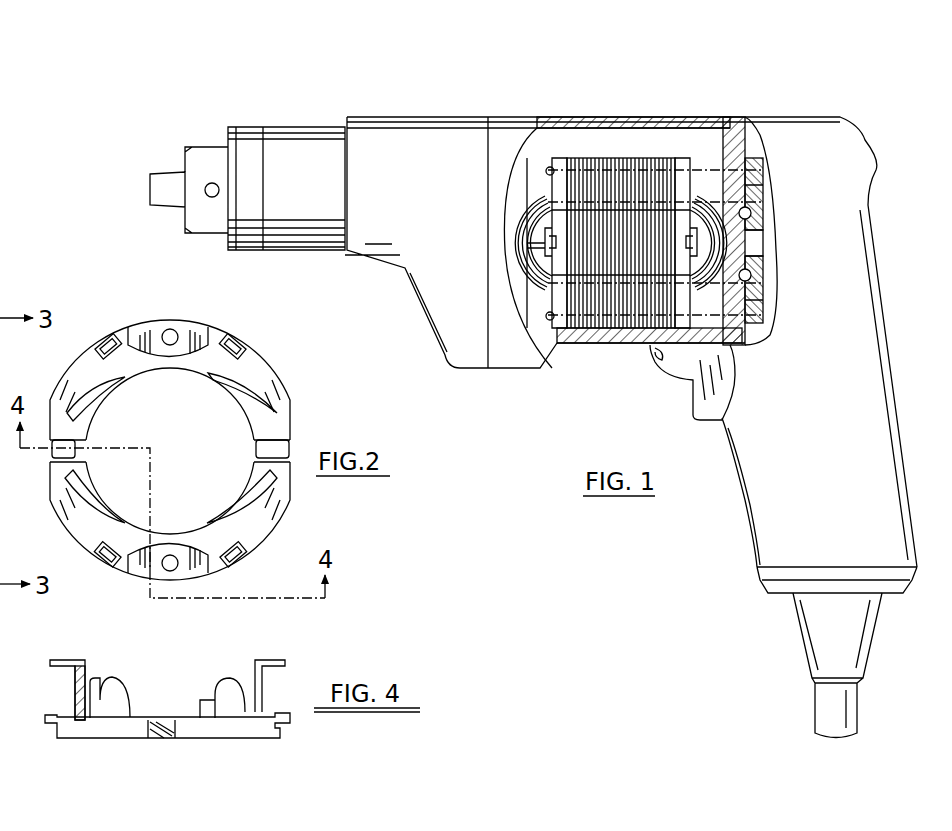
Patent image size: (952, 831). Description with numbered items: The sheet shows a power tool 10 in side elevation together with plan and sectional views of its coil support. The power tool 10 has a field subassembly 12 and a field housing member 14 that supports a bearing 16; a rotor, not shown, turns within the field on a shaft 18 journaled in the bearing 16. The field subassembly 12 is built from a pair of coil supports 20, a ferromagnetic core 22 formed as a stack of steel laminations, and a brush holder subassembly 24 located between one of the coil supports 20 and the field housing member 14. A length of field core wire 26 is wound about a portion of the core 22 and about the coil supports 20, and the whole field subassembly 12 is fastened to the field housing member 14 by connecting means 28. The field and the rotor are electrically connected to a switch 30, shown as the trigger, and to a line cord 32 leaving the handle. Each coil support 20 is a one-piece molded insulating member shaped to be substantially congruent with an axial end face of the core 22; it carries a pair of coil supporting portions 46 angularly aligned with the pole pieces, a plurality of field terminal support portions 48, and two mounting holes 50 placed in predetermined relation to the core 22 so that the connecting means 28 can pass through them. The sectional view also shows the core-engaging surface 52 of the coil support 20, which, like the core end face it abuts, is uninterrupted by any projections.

In FIG. 1, the power tool 10 is at (538, 388).
In FIG. 1, the field subassembly 12 is at (637, 157).
In FIG. 1, the field housing member 14 is at (715, 128).
In FIG. 1, the bearing 16 is at (770, 225).
In FIG. 1, the shaft 18 is at (770, 243).
In FIG. 1, the coil support 20 is at (560, 165).
In FIG. 2, the coil support 20 is at (220, 322).
In FIG. 4, the coil support 20 is at (283, 736).
In FIG. 1, the ferromagnetic core 22 is at (560, 330).
In FIG. 1, the brush holder subassembly 24 is at (713, 162).
In FIG. 1, the field core wire 26 is at (545, 190).
In FIG. 1, the connecting means 28 is at (540, 170).
In FIG. 1, the switch 30 is at (693, 405).
In FIG. 1, the line cord 32 is at (828, 698).
In FIG. 2, the coil supporting portion 46 is at (248, 390).
In FIG. 4, the coil supporting portion 46 is at (272, 660).
In FIG. 2, the field terminal support portion 48 is at (108, 338).
In FIG. 2, the mounting hole 50 is at (172, 330).
In FIG. 4, the mounting hole 50 is at (162, 738).
In FIG. 4, the core-engaging surface 52 is at (95, 738).